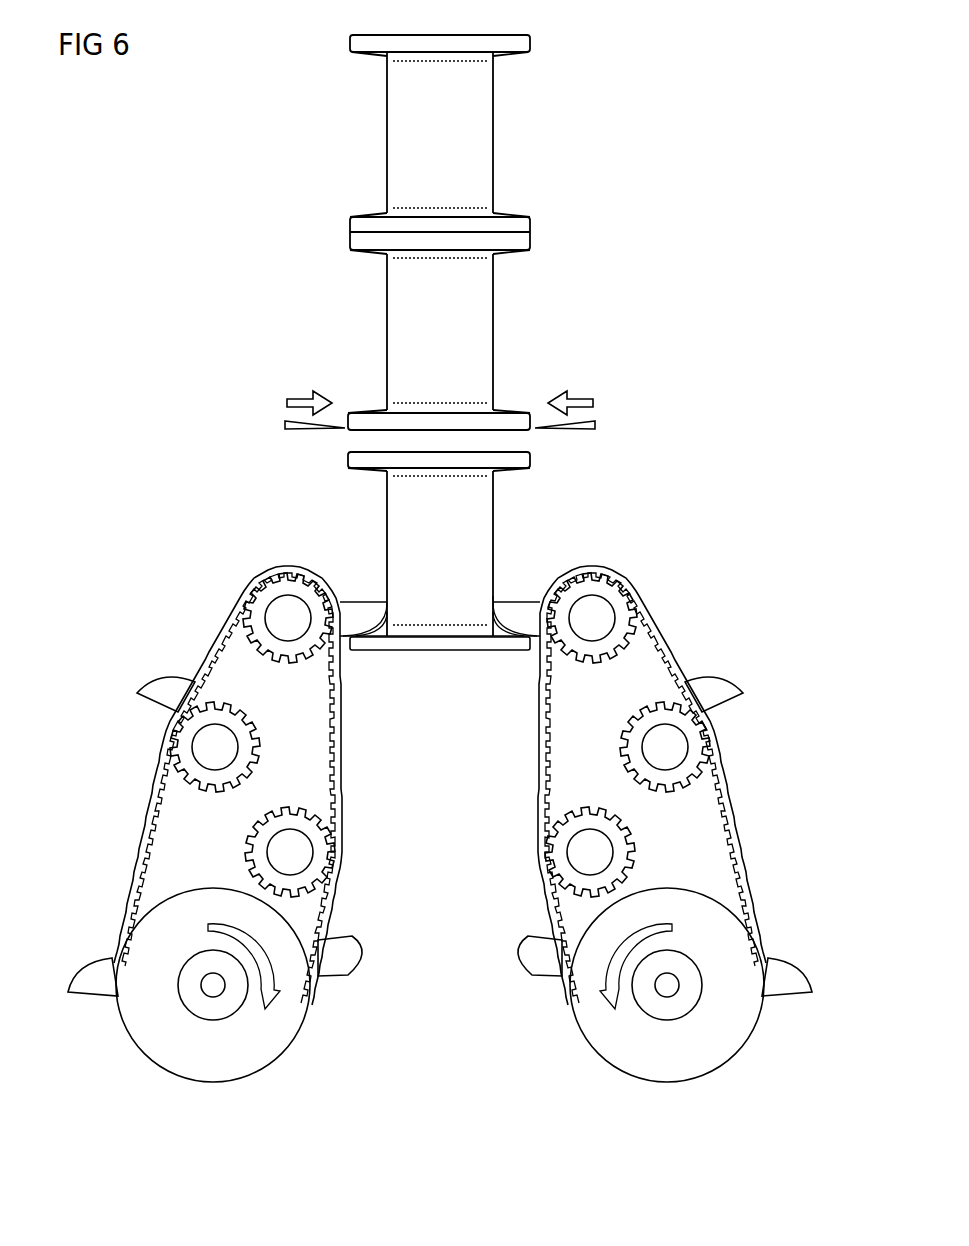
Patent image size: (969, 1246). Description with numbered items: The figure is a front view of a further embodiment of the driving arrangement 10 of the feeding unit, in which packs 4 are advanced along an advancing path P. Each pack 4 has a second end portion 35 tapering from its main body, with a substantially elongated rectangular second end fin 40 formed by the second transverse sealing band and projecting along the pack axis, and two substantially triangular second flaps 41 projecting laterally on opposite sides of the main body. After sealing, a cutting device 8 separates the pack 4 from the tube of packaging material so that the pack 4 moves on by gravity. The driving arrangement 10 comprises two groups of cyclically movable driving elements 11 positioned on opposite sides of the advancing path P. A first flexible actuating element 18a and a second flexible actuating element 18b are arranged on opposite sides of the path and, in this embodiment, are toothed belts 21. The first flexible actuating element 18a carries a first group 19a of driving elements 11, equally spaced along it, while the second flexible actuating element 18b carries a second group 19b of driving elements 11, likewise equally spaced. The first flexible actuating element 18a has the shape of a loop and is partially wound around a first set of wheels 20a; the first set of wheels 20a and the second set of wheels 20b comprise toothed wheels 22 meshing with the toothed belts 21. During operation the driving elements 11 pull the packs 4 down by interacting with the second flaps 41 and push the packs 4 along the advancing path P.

The pack 4 is at (400, 127).
The cutting device 8 is at (580, 426).
The driving arrangement 10 is at (442, 798).
The driving element 11 is at (358, 610).
The first flexible actuating element 18a is at (219, 785).
The second flexible actuating element 18b is at (661, 785).
The first group of driving elements 19a is at (96, 1013).
The second group of driving elements 19b is at (784, 1013).
The first set of wheels 20a is at (176, 843).
The second set of wheels 20b is at (704, 843).
The toothed belt 21 is at (330, 760).
The toothed wheel 22 is at (288, 660).
The second end portion 35 is at (509, 586).
The second end fin 40 is at (443, 651).
The second flap 41 is at (388, 628).